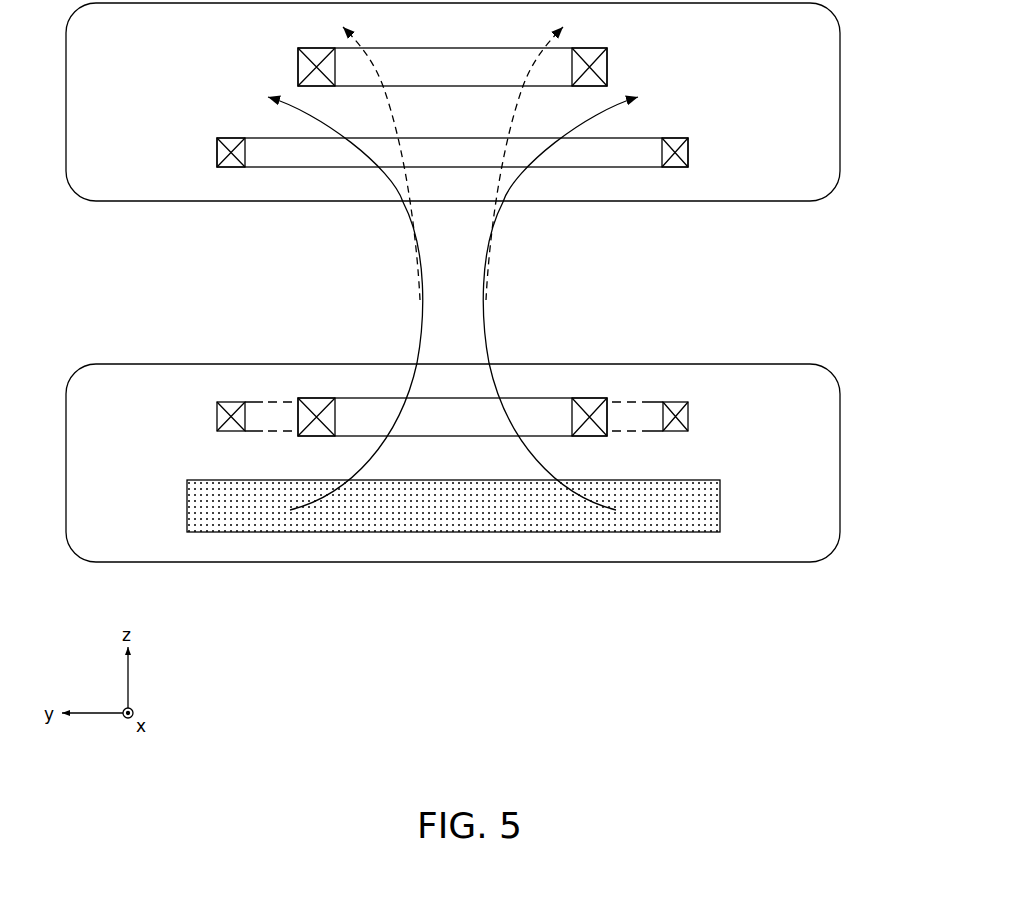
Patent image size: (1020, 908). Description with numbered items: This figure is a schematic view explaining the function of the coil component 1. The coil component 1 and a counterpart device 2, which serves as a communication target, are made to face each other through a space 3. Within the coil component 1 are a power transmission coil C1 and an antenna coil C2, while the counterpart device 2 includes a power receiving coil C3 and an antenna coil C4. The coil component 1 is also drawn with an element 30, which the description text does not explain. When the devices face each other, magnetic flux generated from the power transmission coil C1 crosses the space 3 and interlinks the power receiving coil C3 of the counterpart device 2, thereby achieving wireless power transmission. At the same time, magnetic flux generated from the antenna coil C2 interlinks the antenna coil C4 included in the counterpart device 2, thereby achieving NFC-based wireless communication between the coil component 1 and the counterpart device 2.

The coil component 1 is at (840, 455).
The counterpart device 2 is at (840, 100).
The space 3 is at (466, 294).
The magnetic body plate 30 is at (706, 512).
The power transmission coil C1 is at (588, 436).
The antenna coil C2 is at (688, 417).
The power receiving coil C3 is at (607, 67).
The antenna coil C4 is at (688, 152).